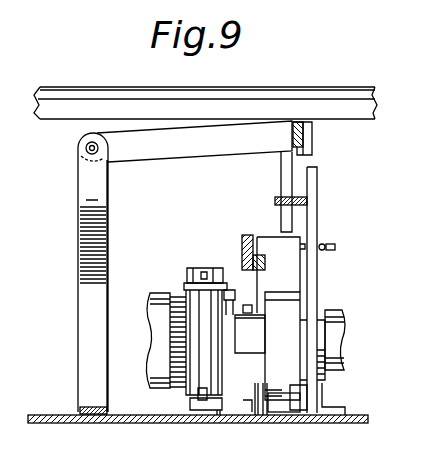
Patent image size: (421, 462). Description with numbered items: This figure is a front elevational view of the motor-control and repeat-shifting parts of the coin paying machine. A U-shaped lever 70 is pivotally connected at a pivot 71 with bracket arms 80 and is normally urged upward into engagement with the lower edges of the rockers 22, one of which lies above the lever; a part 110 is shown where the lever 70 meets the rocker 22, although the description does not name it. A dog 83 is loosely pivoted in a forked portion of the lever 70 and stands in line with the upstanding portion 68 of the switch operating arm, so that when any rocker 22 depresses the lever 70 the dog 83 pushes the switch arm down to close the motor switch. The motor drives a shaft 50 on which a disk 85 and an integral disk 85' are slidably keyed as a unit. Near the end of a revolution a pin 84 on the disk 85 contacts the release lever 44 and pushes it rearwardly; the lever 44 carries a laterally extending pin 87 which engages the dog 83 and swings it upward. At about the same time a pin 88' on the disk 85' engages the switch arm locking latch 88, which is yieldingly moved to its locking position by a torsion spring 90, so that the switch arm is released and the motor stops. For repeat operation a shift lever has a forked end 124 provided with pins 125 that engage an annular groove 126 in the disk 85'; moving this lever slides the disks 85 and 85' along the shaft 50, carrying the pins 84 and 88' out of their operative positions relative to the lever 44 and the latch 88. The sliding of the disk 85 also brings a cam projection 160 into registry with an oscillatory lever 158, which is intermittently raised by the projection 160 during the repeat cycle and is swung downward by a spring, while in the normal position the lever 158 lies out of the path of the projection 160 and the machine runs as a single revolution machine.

The rocker 22 is at (332, 86).
The release lever 44 is at (318, 223).
The shaft 50 is at (346, 344).
The upstanding portion 68 is at (306, 268).
The U-shaped lever 70 is at (193, 152).
The pivot 71 is at (85, 148).
The bracket arm 80 is at (78, 300).
The dog 83 is at (291, 168).
The pin 84 is at (326, 378).
The disk 85 is at (305, 348).
The disk 85' is at (219, 282).
The pin 87 is at (275, 200).
The switch arm locking latch 88 is at (250, 365).
The pin 88' is at (250, 334).
The torsion spring 90 is at (262, 410).
The bracket 110 is at (312, 138).
The forked end 124 is at (193, 268).
The pin 125 is at (186, 292).
The annular groove 126 is at (170, 326).
The oscillatory lever 158 is at (242, 242).
The cam projection 160 is at (279, 410).